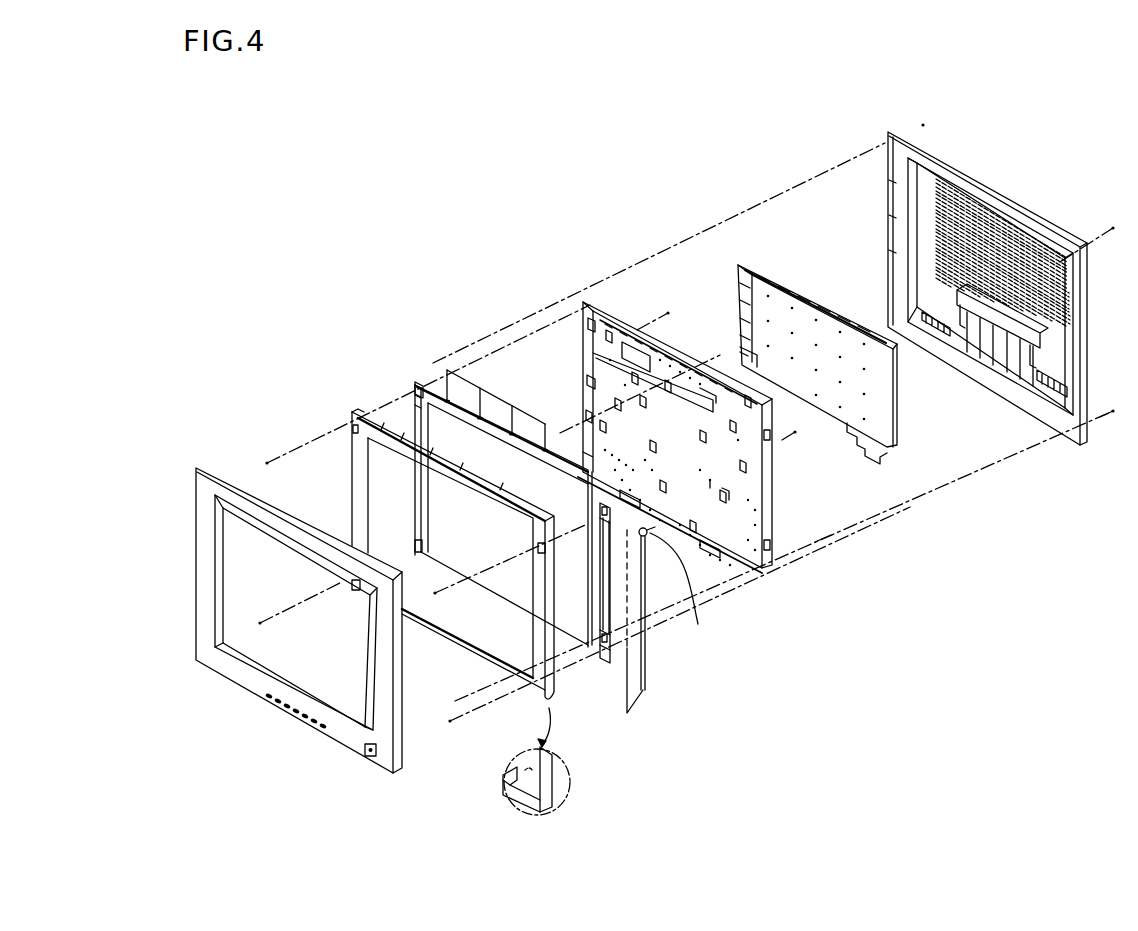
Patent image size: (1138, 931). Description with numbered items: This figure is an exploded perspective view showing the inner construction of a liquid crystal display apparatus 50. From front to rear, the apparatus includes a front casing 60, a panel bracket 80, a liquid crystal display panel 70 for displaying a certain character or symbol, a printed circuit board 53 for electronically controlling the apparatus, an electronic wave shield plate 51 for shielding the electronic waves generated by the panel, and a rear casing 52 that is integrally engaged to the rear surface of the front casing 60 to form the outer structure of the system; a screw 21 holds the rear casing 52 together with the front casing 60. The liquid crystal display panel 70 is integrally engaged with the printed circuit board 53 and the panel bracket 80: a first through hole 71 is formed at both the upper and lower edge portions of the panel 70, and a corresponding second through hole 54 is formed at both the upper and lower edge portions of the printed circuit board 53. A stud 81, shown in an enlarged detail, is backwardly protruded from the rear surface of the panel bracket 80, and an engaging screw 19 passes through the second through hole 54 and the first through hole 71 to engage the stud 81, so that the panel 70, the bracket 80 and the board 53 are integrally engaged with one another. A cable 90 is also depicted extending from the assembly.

The liquid crystal display apparatus 50 is at (245, 157).
The electronic wave shield plate 51 is at (763, 267).
The rear casing 52 is at (957, 168).
The printed circuit board 53 is at (610, 303).
The second through hole 54 is at (772, 570).
The front casing 60 is at (216, 464).
The liquid crystal display panel 70 is at (430, 374).
The first through hole 71 is at (603, 663).
The panel bracket 80 is at (356, 441).
The stud 81 is at (531, 812).
The cable 90 is at (698, 624).
The engaging screw 19 is at (823, 539).
The screw 21 is at (1114, 414).